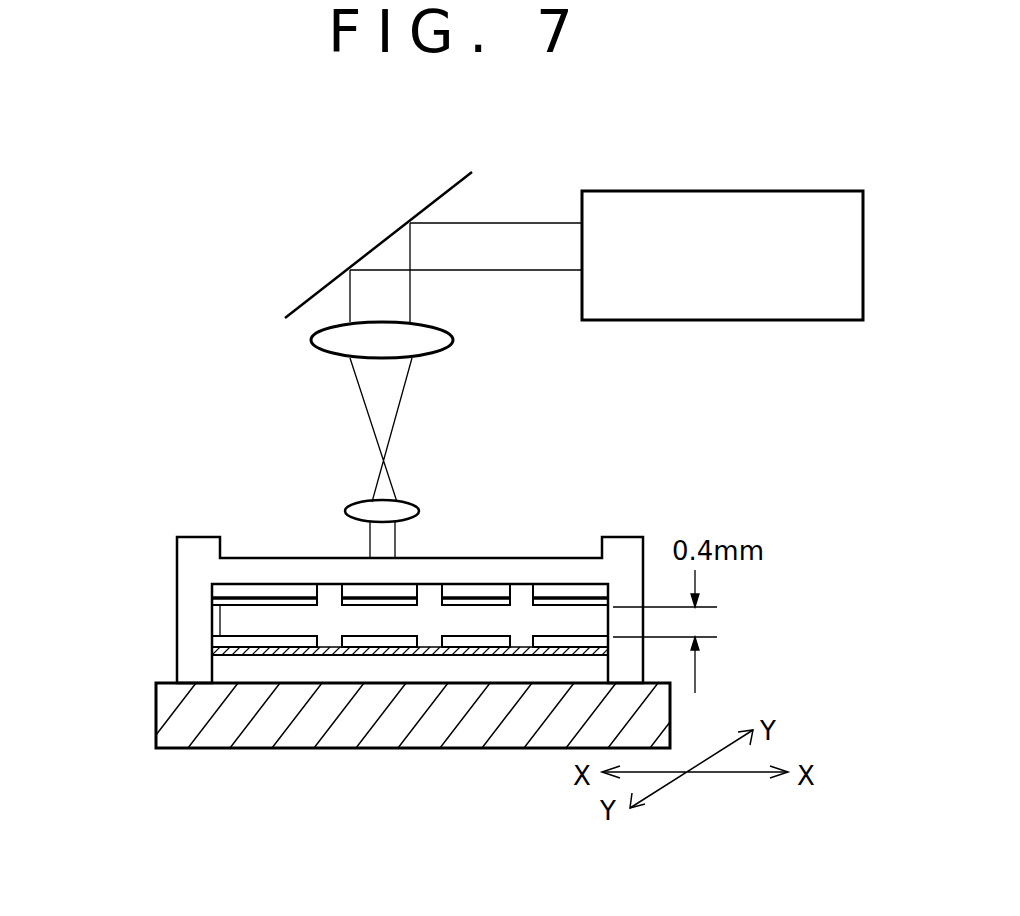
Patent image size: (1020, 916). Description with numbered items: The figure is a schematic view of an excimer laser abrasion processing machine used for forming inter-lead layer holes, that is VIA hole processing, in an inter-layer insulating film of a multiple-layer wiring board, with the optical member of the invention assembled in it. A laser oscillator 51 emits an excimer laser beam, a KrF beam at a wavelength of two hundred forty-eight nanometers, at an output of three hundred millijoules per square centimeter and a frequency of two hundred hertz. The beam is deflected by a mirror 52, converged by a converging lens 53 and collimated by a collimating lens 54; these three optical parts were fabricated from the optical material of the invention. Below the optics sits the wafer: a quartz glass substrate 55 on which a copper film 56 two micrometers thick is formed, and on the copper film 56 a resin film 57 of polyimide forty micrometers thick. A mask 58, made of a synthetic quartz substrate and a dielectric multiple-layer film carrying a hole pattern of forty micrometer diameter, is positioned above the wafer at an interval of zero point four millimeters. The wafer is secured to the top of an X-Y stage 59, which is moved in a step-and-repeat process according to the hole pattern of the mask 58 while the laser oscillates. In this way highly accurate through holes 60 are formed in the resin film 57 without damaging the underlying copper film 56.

The laser oscillator 51 is at (758, 191).
The mirror 52 is at (422, 210).
The converging lens 53 is at (312, 343).
The collimating lens 54 is at (356, 505).
The quartz glass substrate 55 is at (226, 670).
The copper film 56 is at (216, 655).
The resin film 57 is at (215, 647).
The mask 58 is at (222, 596).
The X-Y stage 59 is at (270, 733).
The through hole 60 is at (441, 642).